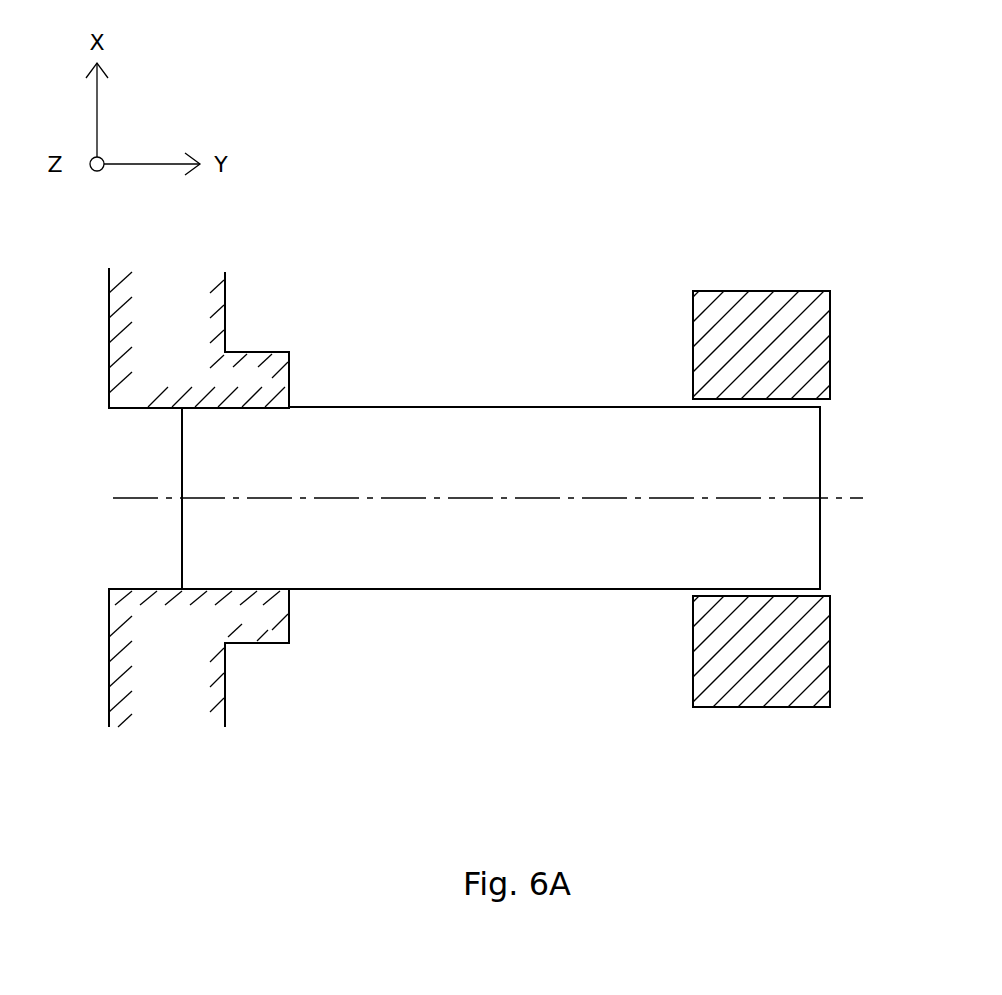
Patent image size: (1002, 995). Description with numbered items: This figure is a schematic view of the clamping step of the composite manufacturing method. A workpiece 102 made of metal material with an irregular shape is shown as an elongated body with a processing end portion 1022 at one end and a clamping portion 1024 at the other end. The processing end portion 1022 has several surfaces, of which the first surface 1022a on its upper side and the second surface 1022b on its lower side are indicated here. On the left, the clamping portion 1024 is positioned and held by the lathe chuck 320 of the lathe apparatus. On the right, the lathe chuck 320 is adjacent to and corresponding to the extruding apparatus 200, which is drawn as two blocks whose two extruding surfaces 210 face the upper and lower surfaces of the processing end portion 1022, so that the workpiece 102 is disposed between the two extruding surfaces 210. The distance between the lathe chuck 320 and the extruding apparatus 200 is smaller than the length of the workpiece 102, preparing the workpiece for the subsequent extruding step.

The workpiece 102 is at (480, 407).
The processing end portion 1022 is at (806, 468).
The first surface 1022a is at (780, 409).
The second surface 1022b is at (780, 579).
The clamping portion 1024 is at (182, 433).
The lathe chuck 320 is at (226, 313).
The extruding apparatus 200 is at (830, 335).
The extruding surface 210 is at (730, 398).